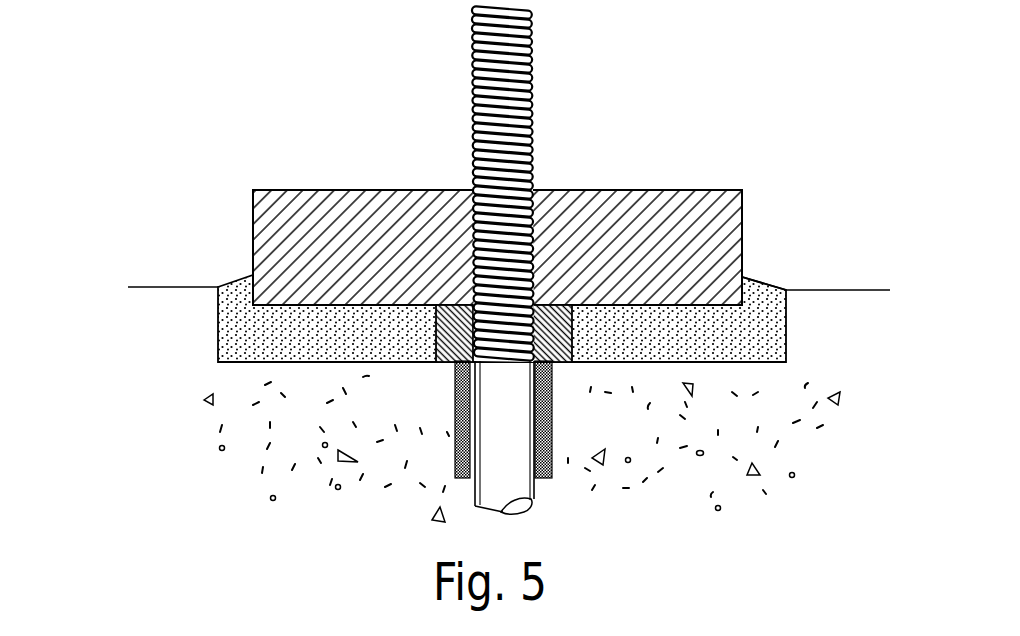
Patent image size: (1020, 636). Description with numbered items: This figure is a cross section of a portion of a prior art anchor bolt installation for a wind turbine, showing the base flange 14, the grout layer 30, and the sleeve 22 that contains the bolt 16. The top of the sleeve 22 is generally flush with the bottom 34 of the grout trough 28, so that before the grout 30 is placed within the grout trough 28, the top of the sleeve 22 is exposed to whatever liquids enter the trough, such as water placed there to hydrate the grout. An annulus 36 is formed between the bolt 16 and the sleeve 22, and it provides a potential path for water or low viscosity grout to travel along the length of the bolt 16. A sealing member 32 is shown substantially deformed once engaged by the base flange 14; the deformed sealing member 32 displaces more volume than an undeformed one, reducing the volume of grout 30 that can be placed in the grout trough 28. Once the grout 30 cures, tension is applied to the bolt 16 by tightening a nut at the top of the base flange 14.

The base flange 14 is at (686, 190).
The bolt 16 is at (531, 68).
The sleeve 22 is at (553, 410).
The grout trough 28 is at (787, 325).
The grout layer 30 is at (758, 280).
The sealing member 32 is at (452, 343).
The bottom of grout trough 34 is at (787, 362).
The annulus 36 is at (535, 482).